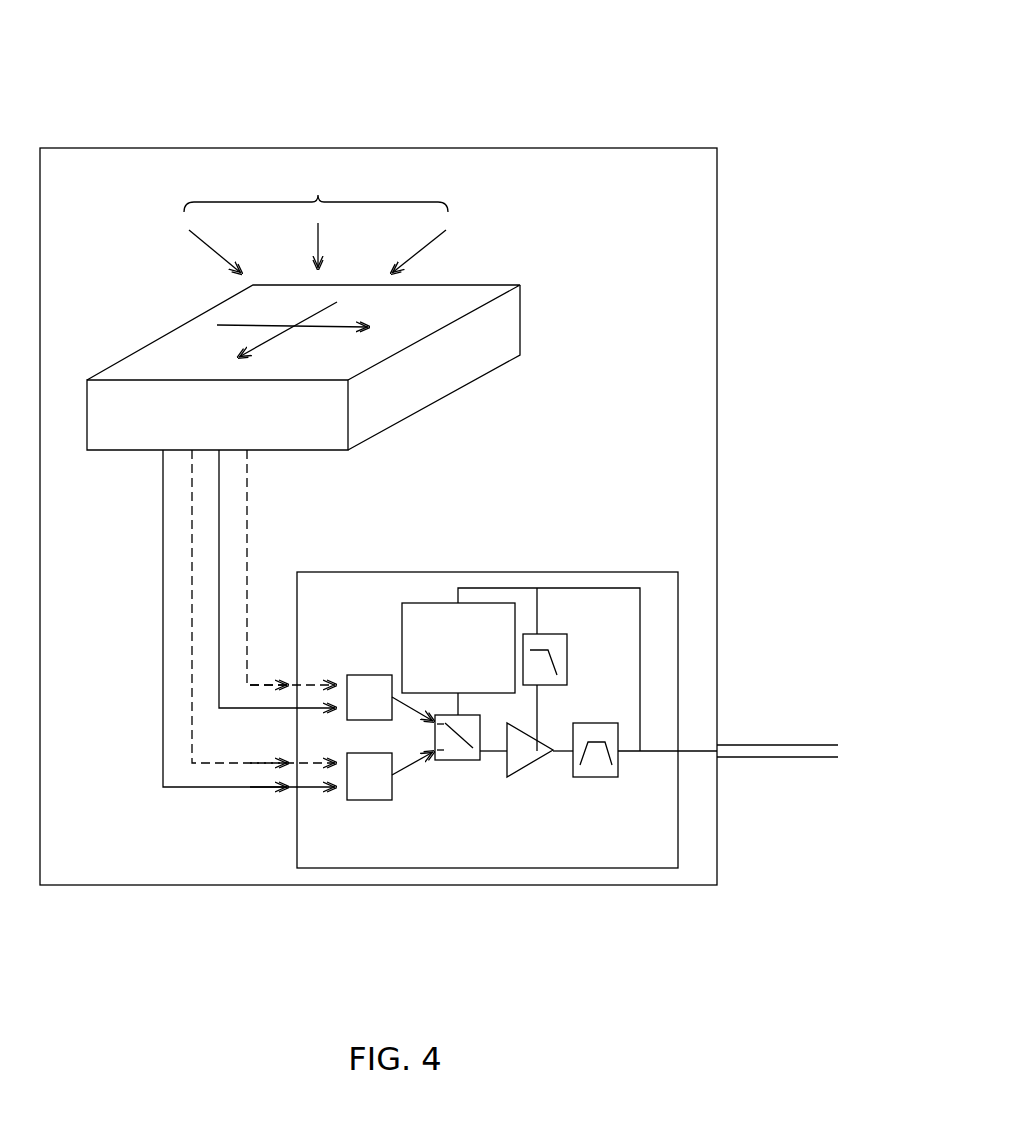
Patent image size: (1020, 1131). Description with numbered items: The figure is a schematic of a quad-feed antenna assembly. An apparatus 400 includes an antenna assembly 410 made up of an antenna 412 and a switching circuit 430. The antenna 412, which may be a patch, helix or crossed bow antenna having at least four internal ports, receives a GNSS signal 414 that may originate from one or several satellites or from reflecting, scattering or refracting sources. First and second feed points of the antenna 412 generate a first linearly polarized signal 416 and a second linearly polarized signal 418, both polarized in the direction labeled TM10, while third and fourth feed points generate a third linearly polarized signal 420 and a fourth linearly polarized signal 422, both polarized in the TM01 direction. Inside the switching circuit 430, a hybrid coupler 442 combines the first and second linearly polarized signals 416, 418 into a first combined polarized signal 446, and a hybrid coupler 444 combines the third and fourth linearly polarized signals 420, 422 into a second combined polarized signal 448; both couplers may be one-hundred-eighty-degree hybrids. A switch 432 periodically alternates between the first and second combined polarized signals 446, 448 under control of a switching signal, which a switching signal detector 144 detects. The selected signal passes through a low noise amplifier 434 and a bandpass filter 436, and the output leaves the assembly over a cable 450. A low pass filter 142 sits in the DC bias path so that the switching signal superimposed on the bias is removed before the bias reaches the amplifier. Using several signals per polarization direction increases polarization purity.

The apparatus 400 is at (128, 66).
The antenna assembly 410 is at (520, 148).
The antenna 412 is at (520, 320).
The GNSS signal 414 is at (316, 218).
The first linearly polarized signal 416 is at (219, 513).
The second linearly polarized signal 418 is at (247, 479).
The third linearly polarized signal 420 is at (192, 546).
The fourth linearly polarized signal 422 is at (163, 607).
The switching circuit 430 is at (407, 744).
The switch 432 is at (457, 760).
The low noise amplifier (LNA) 434 is at (530, 777).
The bandpass filter (BPF) 436 is at (595, 777).
The hybrid coupler 442 is at (368, 675).
The hybrid coupler 444 is at (368, 800).
The first combined polarized signal 446 is at (413, 711).
The second combined polarized signal 448 is at (410, 780).
The cable 450 is at (787, 757).
The low pass filter (LPF) 142 is at (540, 634).
The switching signal detector 144 is at (492, 603).